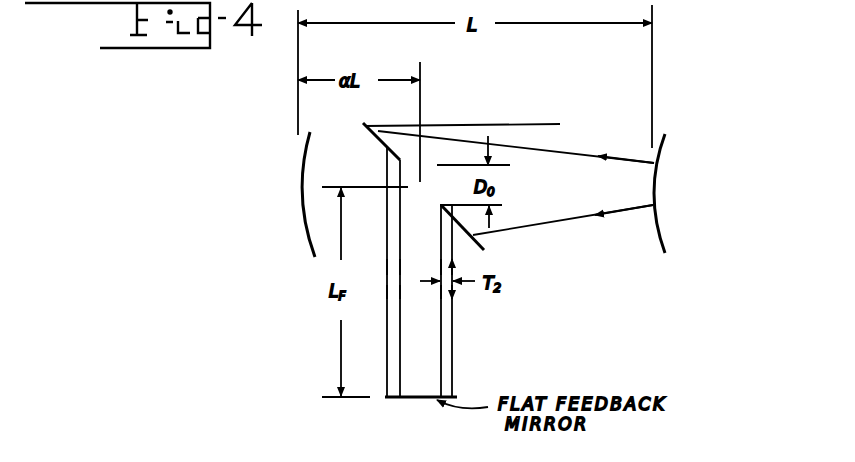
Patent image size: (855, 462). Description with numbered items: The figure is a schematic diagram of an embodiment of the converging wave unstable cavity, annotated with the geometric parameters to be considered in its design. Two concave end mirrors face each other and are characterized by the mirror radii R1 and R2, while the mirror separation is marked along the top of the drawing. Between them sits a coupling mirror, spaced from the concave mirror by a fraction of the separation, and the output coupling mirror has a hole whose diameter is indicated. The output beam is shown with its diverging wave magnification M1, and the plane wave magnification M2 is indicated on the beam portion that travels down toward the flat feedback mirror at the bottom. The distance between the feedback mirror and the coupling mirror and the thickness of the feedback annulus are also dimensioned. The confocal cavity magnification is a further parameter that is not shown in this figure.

The mirror radius R1 is at (299, 218).
The mirror radius R2 is at (662, 224).
The diverging wave magnification M1 is at (533, 125).
The plane wave magnification M2 is at (370, 357).